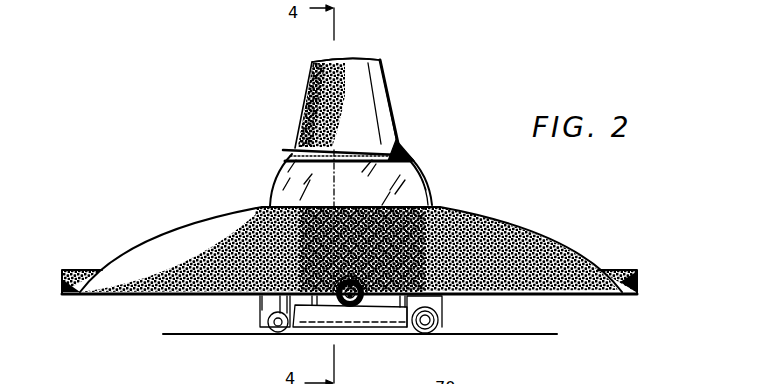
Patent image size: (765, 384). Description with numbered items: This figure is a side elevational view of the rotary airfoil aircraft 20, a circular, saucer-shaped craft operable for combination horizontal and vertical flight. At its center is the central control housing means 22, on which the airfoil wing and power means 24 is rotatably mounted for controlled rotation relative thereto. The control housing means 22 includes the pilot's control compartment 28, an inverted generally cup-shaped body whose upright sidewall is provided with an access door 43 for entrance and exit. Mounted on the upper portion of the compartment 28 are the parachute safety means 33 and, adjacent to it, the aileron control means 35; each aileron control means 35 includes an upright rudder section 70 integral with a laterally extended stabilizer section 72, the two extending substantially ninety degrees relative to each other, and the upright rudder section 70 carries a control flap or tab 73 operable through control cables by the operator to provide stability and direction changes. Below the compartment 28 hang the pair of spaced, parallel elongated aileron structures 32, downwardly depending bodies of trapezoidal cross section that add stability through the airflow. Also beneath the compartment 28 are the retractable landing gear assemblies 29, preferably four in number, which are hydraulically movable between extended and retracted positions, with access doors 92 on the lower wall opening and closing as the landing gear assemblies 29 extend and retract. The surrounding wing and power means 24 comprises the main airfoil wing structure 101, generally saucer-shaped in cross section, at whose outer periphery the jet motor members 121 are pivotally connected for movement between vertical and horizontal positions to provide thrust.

The rotary airfoil aircraft 20 is at (208, 186).
The central control housing means 22 is at (428, 161).
The airfoil wing and power means 24 is at (137, 270).
The pilot's control compartment 28 is at (432, 206).
The retractable landing gear assemblies 29 is at (280, 329).
The aileron structures 32 is at (323, 312).
The parachute safety means 33 is at (404, 152).
The aileron control means 35 is at (340, 78).
The access door 43 is at (420, 189).
The upright rudder sections 70 is at (340, 62).
The stabilizer sections 72 is at (296, 149).
The control flaps or tabs 73 is at (377, 94).
The access doors 92 is at (268, 310).
The main airfoil wing structure 101 is at (517, 235).
The jet motor members 121 is at (349, 302).